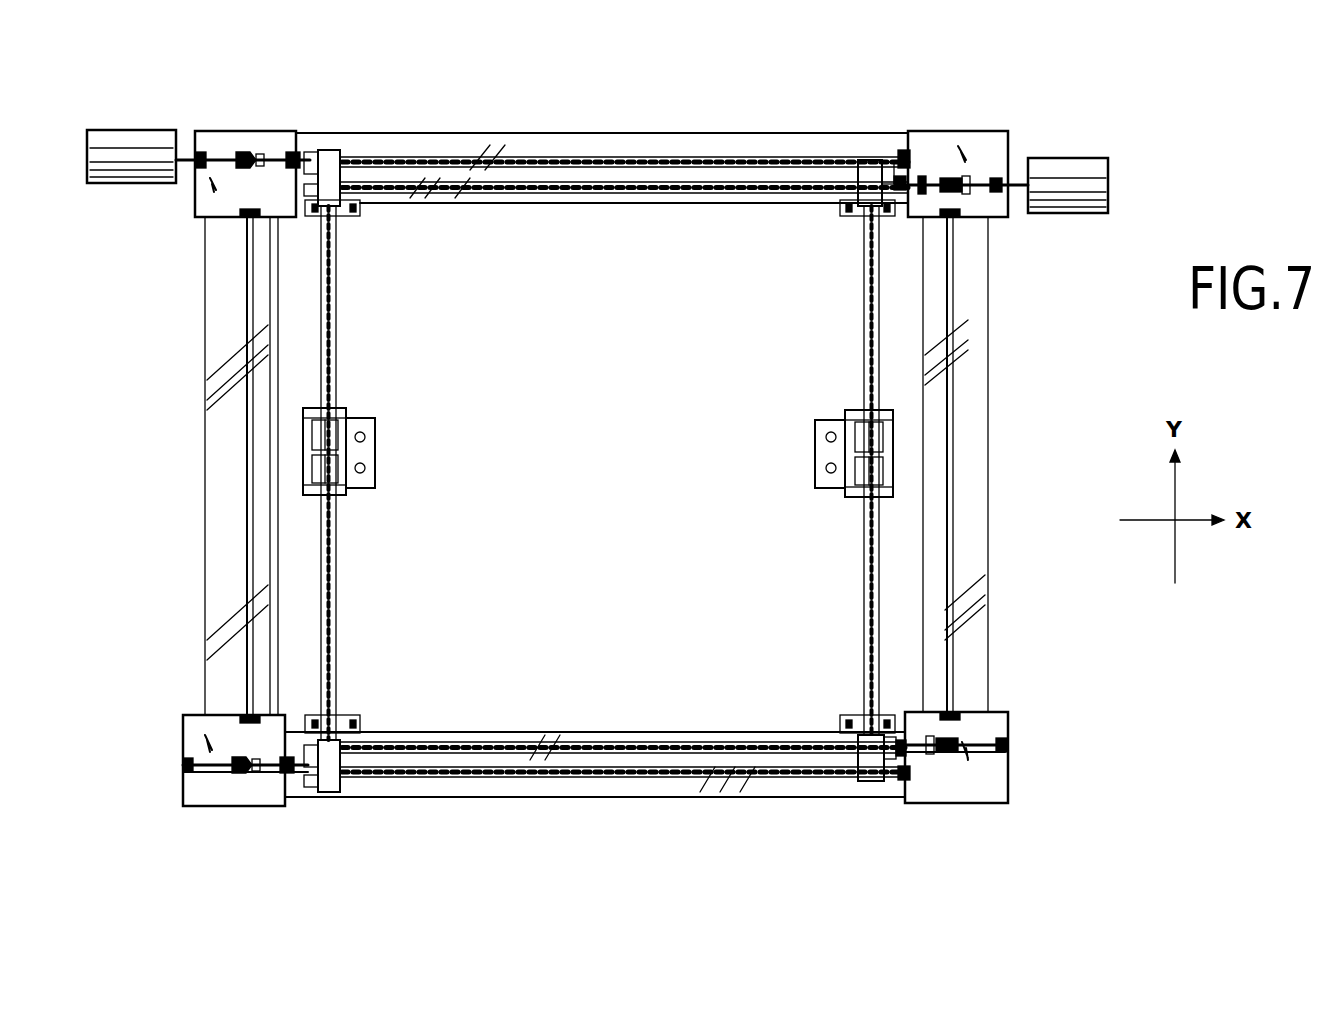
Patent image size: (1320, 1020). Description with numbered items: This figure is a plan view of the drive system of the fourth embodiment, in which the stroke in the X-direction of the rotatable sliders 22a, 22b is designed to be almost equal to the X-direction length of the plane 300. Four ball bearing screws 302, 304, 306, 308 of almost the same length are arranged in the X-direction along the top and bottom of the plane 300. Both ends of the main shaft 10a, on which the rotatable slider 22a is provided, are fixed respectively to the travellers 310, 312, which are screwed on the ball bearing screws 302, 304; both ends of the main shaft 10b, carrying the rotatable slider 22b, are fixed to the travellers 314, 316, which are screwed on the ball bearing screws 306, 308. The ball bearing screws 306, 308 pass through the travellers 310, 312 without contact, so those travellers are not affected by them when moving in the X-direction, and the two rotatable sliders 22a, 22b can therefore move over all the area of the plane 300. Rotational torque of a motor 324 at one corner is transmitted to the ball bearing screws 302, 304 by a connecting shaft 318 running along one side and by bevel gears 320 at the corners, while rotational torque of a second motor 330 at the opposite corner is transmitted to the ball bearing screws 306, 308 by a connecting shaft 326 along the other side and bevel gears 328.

The plane 300 is at (610, 478).
The ball bearing screw 302 is at (500, 138).
The ball bearing screw 304 is at (462, 790).
The ball bearing screw 306 is at (655, 165).
The ball bearing screw 308 is at (653, 745).
The traveller 310 is at (332, 150).
The traveller 312 is at (323, 792).
The traveller 314 is at (880, 185).
The traveller 316 is at (870, 780).
The connecting shaft 318 is at (245, 468).
The bevel gears 320 is at (236, 868).
The motor 324 is at (112, 172).
The connecting shaft 326 is at (990, 368).
The bevel gears 328 is at (950, 200).
The motor 330 is at (1100, 170).
The main shaft 10a is at (338, 560).
The main shaft 10b is at (862, 570).
The rotatable slider 22a is at (352, 408).
The rotatable slider 22b is at (845, 408).